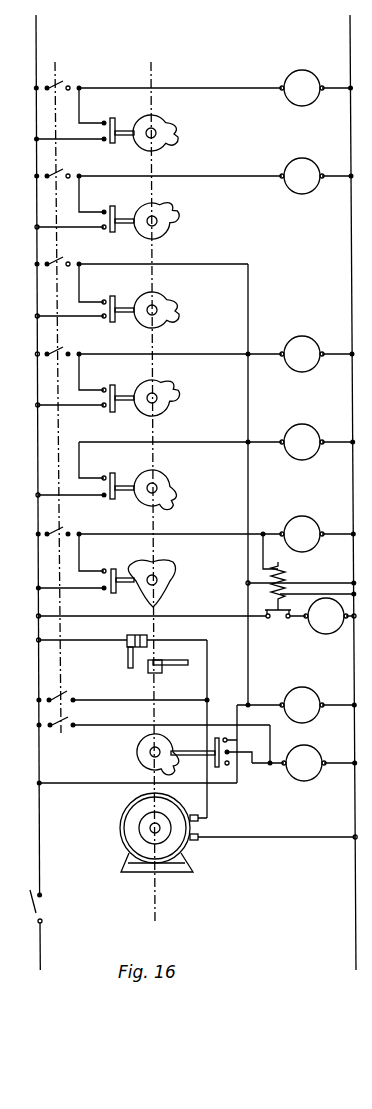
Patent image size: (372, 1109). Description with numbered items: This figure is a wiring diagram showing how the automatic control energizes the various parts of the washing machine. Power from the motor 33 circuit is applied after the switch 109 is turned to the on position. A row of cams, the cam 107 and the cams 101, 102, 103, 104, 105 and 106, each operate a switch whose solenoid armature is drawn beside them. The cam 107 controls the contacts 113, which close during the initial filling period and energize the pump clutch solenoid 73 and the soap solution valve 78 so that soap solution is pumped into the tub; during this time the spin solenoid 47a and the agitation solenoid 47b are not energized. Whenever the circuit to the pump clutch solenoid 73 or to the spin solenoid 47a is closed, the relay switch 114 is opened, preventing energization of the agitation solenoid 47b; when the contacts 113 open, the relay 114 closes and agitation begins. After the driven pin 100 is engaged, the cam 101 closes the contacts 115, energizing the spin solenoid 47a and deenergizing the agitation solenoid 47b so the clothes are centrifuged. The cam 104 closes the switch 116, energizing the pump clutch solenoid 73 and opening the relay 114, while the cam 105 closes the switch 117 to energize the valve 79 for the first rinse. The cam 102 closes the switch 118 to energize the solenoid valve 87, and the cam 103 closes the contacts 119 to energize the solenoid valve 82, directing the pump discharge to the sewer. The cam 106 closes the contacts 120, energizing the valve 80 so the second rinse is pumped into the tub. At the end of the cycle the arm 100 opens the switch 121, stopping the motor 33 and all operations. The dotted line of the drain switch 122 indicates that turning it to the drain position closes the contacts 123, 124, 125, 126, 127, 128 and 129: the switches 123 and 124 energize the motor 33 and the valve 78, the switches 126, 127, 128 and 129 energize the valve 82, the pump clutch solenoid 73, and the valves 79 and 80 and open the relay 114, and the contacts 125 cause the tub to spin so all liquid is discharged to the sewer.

The motor 33 is at (176, 846).
The spin solenoid 47a is at (312, 515).
The agitation solenoid 47b is at (324, 636).
The pump clutch solenoid 73 is at (308, 702).
The soap solution valve 78 is at (305, 780).
The solenoid valve 79 is at (306, 168).
The solenoid valve 80 is at (308, 80).
The solenoid valve 82 is at (303, 344).
The solenoid valve 87 is at (303, 433).
The driven pin 100 is at (178, 658).
The cam 101 is at (168, 578).
The cam 102 is at (168, 488).
The cam 103 is at (168, 395).
The cam 104 is at (168, 308).
The cam 105 is at (168, 215).
The cam 106 is at (170, 128).
The cam 107 is at (136, 756).
The switch 109 is at (43, 906).
The contacts 113 is at (230, 757).
The relay switch 114 is at (277, 600).
The contacts 115 is at (104, 579).
The switch 116 is at (108, 298).
The switch 117 is at (105, 207).
The switch 118 is at (106, 478).
The contacts 119 is at (103, 392).
The contacts 120 is at (107, 118).
The switch 121 is at (127, 660).
The drain switch 122 is at (56, 462).
The switch 123 is at (62, 732).
The switch 124 is at (70, 694).
The contacts 125 is at (63, 526).
The switch 126 is at (63, 346).
The switch 127 is at (63, 256).
The switch 128 is at (65, 166).
The switch 129 is at (65, 78).